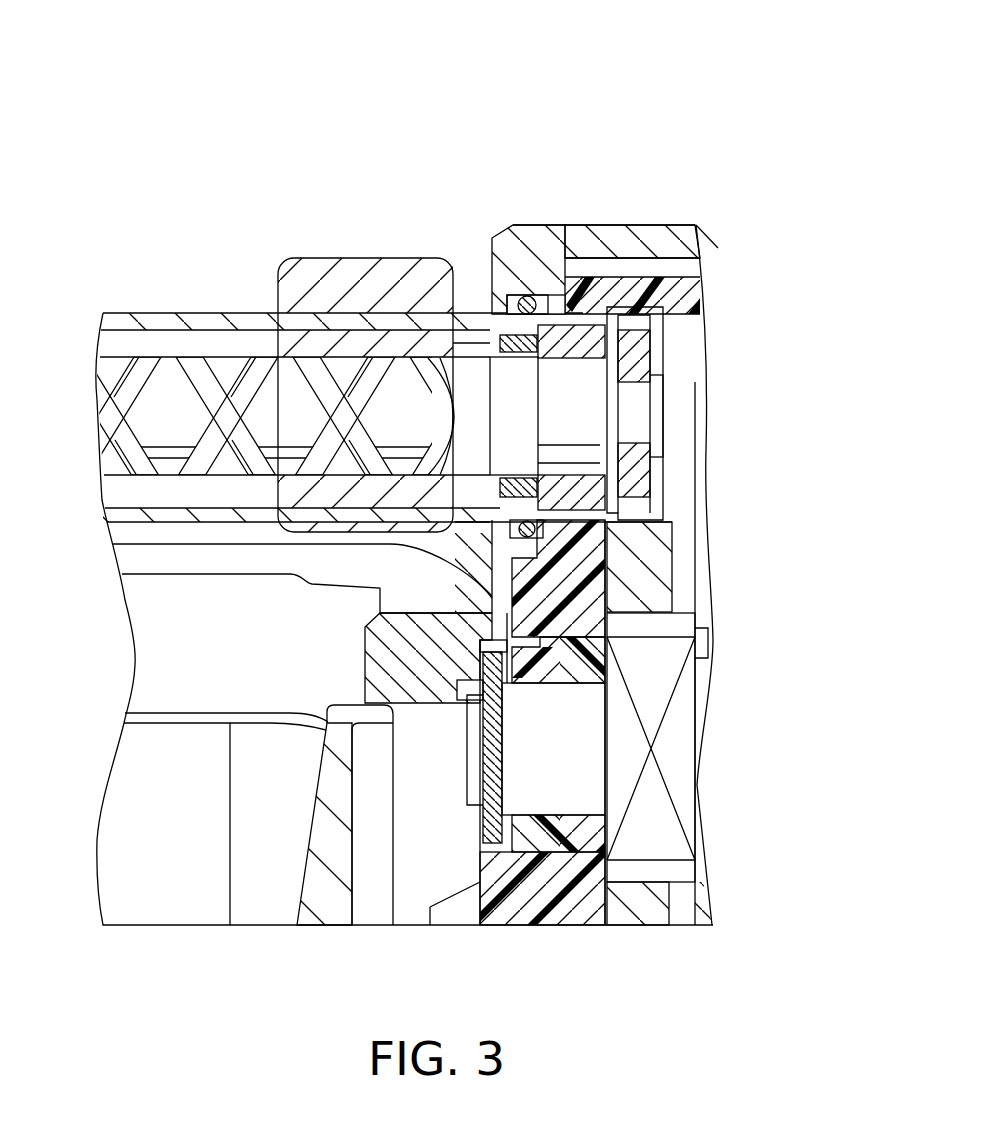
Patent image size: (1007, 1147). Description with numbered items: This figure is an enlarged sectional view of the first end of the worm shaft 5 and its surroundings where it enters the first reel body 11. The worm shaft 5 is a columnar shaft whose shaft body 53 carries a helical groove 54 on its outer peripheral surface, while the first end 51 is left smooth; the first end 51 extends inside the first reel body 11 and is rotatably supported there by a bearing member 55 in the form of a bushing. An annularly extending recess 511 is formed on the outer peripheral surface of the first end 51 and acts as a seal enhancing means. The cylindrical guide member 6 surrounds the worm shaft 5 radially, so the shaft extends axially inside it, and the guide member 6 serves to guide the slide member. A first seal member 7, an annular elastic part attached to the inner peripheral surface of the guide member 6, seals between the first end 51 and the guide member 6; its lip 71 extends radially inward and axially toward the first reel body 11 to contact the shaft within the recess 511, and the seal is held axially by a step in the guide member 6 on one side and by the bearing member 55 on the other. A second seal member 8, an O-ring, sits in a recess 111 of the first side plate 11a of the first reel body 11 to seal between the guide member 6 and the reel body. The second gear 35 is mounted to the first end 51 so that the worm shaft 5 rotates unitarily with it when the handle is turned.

The guide member 6 is at (123, 313).
The worm shaft 5 is at (168, 340).
The shaft body 53 is at (226, 357).
The helical groove 54 is at (270, 358).
The first end 51 is at (498, 325).
The first seal member 7 is at (501, 334).
The lip 71 is at (506, 322).
The second seal member 8 is at (528, 296).
The recess 111 is at (562, 307).
The first side plate 11a is at (625, 225).
The first reel body 11 is at (683, 210).
The bearing member 55 is at (593, 337).
The recess 511 is at (665, 428).
The second gear 35 is at (665, 483).